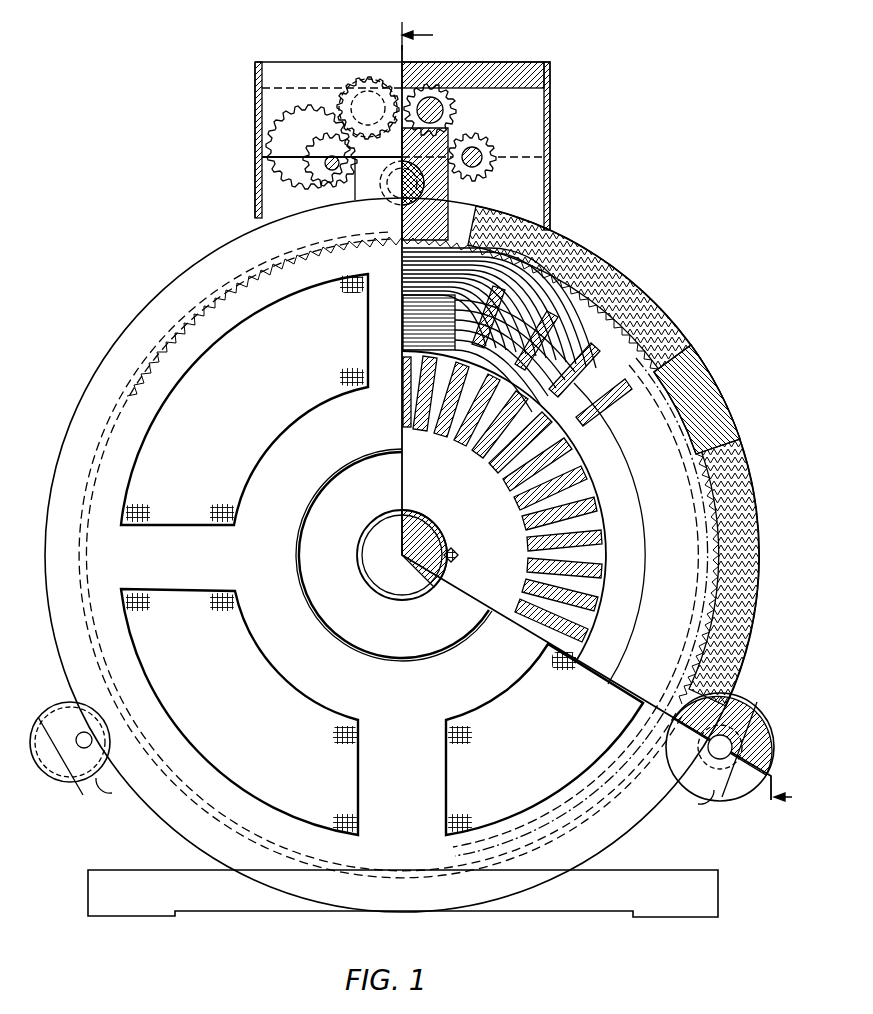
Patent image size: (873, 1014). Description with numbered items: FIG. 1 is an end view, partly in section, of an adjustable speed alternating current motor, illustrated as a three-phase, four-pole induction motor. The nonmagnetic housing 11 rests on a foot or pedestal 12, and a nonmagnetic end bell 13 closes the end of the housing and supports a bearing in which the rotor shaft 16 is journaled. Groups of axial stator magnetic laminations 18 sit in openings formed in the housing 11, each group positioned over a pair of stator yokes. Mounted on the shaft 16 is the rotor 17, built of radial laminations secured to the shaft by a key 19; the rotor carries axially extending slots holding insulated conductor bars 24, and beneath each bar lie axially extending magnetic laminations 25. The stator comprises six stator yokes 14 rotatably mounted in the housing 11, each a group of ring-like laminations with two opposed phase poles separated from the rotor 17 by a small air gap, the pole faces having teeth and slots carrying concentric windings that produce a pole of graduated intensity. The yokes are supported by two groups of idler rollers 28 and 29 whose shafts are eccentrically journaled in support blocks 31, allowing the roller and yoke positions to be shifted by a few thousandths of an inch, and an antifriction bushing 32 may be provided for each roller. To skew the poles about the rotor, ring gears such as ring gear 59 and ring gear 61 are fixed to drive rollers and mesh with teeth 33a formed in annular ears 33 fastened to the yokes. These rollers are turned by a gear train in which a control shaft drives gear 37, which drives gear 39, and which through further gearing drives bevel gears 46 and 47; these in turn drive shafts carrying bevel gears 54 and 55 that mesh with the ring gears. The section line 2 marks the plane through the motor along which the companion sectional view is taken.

The section line 2- 2 is at (597, 416).
The nonmagnetic housing 11 is at (703, 390).
The foot or pedestal 12 is at (143, 916).
The nonmagnetic end bell 13 is at (104, 345).
The stator yoke 14 is at (632, 645).
The rotor shaft 16 is at (438, 519).
The rotor 17 is at (572, 420).
The axial stator magnetic laminations 18 is at (614, 267).
The key 19 is at (457, 556).
The insulated conductor bar 24 is at (598, 512).
The axially extending magnetic laminations 25 is at (528, 565).
The idler roller 28 is at (735, 803).
The idler roller 29 is at (60, 797).
The support block 31 is at (110, 793).
The antifriction bushing 32 is at (750, 708).
The annular ear 33 is at (697, 448).
The teeth 33a is at (243, 273).
The gear 37 is at (458, 108).
The gear 39 is at (356, 80).
The bevel gear 46 is at (324, 170).
The bevel gear 47 is at (481, 180).
The bevel gear 54 is at (346, 174).
The bevel gear 55 is at (330, 158).
The ring gear 59 is at (452, 192).
The ring gear 61 is at (393, 190).